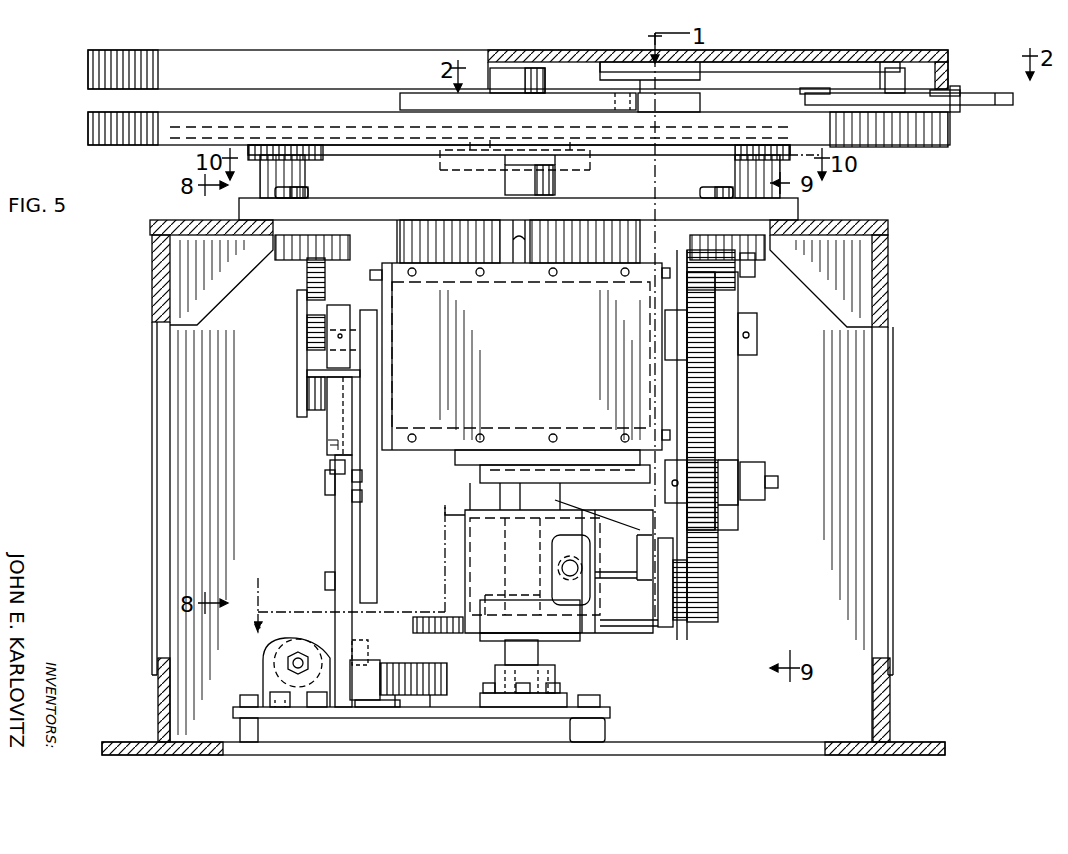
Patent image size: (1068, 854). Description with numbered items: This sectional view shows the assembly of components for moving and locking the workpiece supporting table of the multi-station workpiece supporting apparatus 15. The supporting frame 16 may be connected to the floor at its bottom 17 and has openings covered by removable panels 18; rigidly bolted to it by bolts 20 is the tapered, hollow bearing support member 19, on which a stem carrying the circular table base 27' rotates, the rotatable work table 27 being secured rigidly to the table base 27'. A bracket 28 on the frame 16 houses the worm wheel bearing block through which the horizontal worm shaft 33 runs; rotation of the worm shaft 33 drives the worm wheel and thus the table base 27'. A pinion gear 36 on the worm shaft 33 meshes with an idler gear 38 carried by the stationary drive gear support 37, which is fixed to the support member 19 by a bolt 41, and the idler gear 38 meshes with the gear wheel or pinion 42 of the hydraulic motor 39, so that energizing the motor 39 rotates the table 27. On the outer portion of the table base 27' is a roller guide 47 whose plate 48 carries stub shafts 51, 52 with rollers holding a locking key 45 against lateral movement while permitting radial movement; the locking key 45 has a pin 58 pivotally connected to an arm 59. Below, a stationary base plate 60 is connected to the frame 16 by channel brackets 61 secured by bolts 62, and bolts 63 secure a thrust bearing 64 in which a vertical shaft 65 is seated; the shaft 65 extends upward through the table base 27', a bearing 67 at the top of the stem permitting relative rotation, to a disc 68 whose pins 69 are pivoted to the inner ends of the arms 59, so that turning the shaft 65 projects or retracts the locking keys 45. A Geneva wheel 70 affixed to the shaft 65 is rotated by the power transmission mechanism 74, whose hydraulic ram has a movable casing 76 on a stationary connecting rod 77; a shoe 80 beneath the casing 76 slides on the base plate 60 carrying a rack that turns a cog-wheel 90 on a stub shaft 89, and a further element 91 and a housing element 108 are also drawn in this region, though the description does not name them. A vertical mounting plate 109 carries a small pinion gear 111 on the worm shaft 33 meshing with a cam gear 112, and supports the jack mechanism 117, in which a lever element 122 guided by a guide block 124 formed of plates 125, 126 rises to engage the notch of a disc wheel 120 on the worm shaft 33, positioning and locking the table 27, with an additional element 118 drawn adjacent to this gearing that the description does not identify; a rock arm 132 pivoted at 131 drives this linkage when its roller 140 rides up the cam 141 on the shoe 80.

The multi-station operation workpiece supporting apparatus 15 is at (1038, 222).
The supporting frame 16 is at (165, 222).
The bottom of the frame 17 is at (120, 755).
The removable panels 18 is at (152, 462).
The bearing support member 19 is at (310, 242).
The bolts 20 is at (300, 190).
The rotatable work table 27 is at (518, 57).
The circular table base 27' is at (505, 128).
The bracket 28 is at (395, 250).
The worm shaft 33 is at (757, 335).
The pinion gear 36 is at (700, 290).
The stationary drive gear support 37 is at (720, 424).
The idler gear 38 is at (720, 522).
The hydraulic motor 39 is at (672, 545).
The bolt 41 is at (756, 265).
The gear wheel or pinion 42 is at (718, 605).
The locking key 45 is at (990, 105).
The roller guide 47 is at (962, 122).
The plate 48 is at (920, 120).
The stub shaft 51 is at (800, 92).
The stub shaft 52 is at (948, 92).
The pin 58 is at (898, 68).
The arm 59 is at (760, 62).
The stationary base plate 60 is at (356, 718).
The channel brackets 61 is at (240, 726).
The bolts 62 is at (247, 695).
The bolts 63 is at (487, 683).
The thrust bearing 64 is at (535, 705).
The vertical shaft 65 is at (528, 68).
The bearing 67 is at (604, 174).
The disc 68 is at (440, 93).
The pins 69 is at (618, 100).
The Geneva wheel 70 is at (481, 632).
The power transmission mechanism 74 is at (256, 646).
The movable casing 76 is at (300, 640).
The stationary connecting rod 77 is at (292, 700).
The shoe 80 is at (302, 700).
The stub shaft 89 is at (420, 700).
The cog-wheel 90 is at (445, 680).
The gear 91 is at (408, 640).
The gear housing 108 is at (462, 512).
The vertical mounting plate 109 is at (372, 395).
The small pinion gear 111 is at (310, 337).
The cam gear 112 is at (305, 288).
The jack mechanism 117 is at (325, 474).
The gear 118 is at (302, 382).
The disc wheel 120 is at (297, 373).
The lever element 122 is at (345, 432).
The guide block 124 is at (323, 454).
The rectangularly shaped plate 125 is at (322, 400).
The rectangularly shaped plate 126 is at (350, 410).
The pivot 131 is at (325, 580).
The rock arm 132 is at (345, 538).
The roller 140 is at (382, 712).
The cam 141 is at (360, 655).